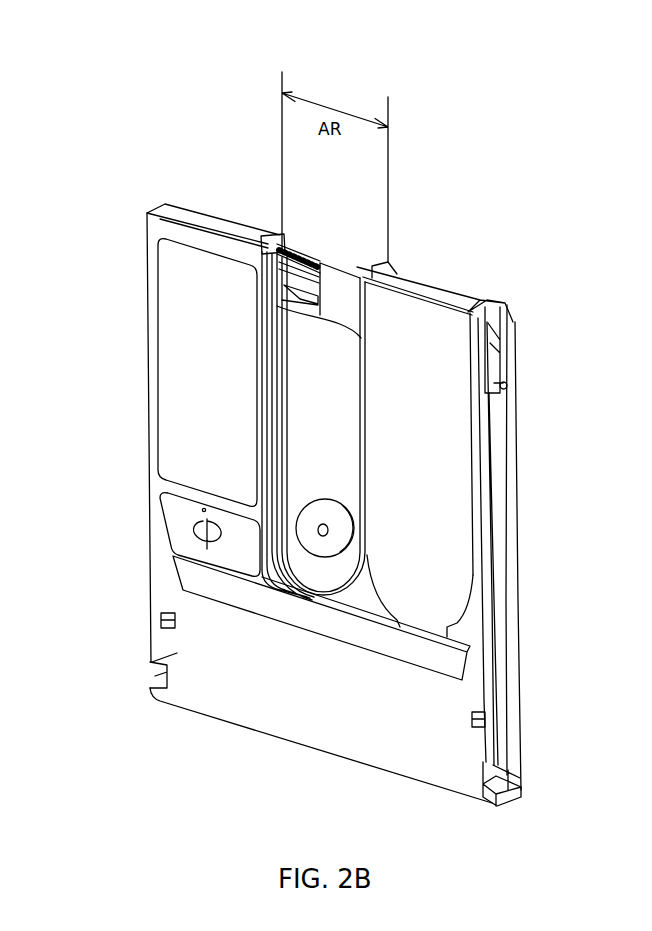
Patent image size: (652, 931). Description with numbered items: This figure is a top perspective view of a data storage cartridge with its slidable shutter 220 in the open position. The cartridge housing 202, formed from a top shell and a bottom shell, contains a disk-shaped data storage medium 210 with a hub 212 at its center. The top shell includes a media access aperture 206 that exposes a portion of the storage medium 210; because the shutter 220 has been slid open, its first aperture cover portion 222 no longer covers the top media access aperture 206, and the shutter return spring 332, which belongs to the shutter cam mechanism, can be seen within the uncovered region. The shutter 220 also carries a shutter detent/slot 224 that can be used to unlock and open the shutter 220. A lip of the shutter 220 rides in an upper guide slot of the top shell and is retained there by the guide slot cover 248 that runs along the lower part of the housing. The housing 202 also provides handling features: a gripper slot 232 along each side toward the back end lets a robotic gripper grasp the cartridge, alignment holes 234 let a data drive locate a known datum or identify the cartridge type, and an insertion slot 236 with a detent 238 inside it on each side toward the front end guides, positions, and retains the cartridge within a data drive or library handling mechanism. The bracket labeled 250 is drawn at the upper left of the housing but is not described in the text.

The cartridge housing 202 is at (237, 707).
The media access aperture 206 is at (275, 352).
The data storage medium 210 is at (342, 405).
The hub 212 is at (325, 500).
The slidable shutter 220 is at (467, 295).
The first aperture cover portion 222 is at (440, 439).
The shutter detent/slot 224 is at (407, 270).
The gripper slot 232 is at (150, 668).
The alignment hole 234 is at (180, 623).
The insertion slot 236 is at (508, 374).
The detent 238 is at (508, 340).
The guide slot cover 248 is at (341, 628).
The frame 250 is at (133, 265).
The shutter return spring 332 is at (303, 256).